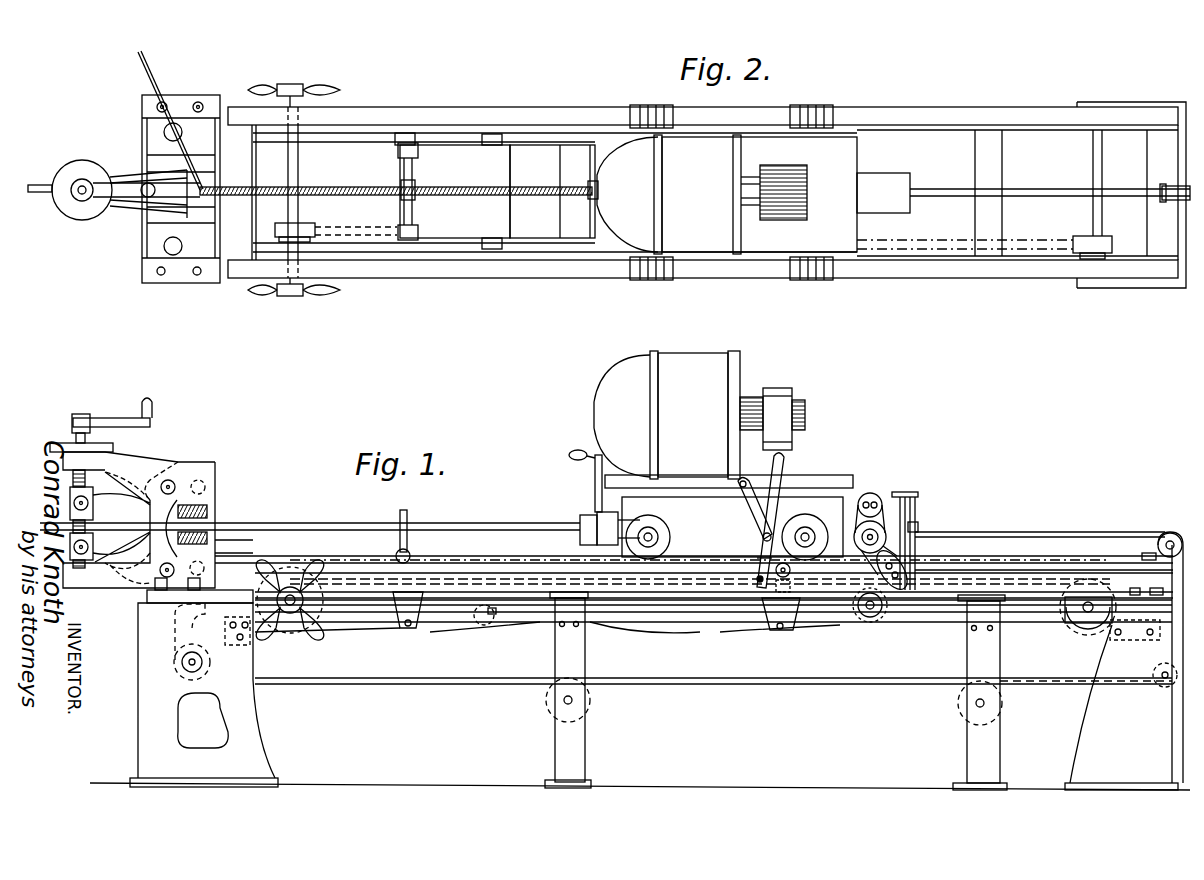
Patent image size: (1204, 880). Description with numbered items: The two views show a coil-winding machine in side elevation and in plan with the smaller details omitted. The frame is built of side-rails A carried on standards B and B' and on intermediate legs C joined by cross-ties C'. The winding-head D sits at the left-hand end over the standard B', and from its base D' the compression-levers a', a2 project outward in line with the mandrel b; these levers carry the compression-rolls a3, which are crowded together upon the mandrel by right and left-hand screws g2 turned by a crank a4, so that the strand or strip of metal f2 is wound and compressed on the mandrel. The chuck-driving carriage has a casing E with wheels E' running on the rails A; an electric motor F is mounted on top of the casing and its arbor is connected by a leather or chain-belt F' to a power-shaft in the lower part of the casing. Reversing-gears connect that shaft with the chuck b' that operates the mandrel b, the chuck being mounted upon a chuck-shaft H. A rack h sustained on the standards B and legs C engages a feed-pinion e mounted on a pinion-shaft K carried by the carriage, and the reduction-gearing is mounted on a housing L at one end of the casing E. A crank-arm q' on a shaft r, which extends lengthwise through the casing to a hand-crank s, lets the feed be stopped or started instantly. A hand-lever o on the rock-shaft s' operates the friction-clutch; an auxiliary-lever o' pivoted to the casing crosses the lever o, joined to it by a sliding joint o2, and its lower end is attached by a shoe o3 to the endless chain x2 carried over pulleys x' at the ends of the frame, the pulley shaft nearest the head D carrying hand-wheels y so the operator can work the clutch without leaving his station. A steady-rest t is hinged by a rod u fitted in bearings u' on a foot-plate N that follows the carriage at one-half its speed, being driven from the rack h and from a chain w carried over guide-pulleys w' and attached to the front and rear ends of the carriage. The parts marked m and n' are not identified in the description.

In FIG. 2, the side-rails A is at (1015, 118).
In FIG. 1, the side-rails A is at (270, 556).
In FIG. 2, the standard B is at (1131, 212).
In FIG. 1, the standard B is at (1113, 667).
In FIG. 1, the standard B' is at (195, 688).
In FIG. 1, the intermediate legs C is at (776, 691).
In FIG. 2, the cross-ties C' is at (742, 192).
In FIG. 2, the winding-head D is at (181, 189).
In FIG. 1, the winding-head D is at (139, 510).
In FIG. 2, the base of the winding-head D' is at (216, 180).
In FIG. 1, the base of the winding-head D' is at (234, 546).
In FIG. 2, the casing E is at (782, 200).
In FIG. 1, the casing E is at (729, 516).
In FIG. 2, the wheels E' is at (751, 177).
In FIG. 1, the wheels E' is at (727, 530).
In FIG. 2, the electric motor F is at (727, 194).
In FIG. 1, the electric motor F is at (667, 415).
In FIG. 1, the leather or chain-belt F' is at (787, 419).
In FIG. 2, the chuck-shaft H is at (940, 200).
In FIG. 1, the pinion-shaft K is at (884, 606).
In FIG. 2, the housing L is at (880, 180).
In FIG. 2, the foot-plate N is at (455, 191).
In FIG. 1, the foot-plate N is at (453, 622).
In FIG. 1, the compression-lever a' is at (135, 466).
In FIG. 1, the compression-lever a2 is at (128, 590).
In FIG. 1, the compression-rolls a3 is at (210, 510).
In FIG. 2, the crank a4 is at (146, 195).
In FIG. 1, the crank a4 is at (152, 410).
In FIG. 1, the mandrel b is at (305, 512).
In FIG. 1, the chuck b' is at (589, 514).
In FIG. 1, the feed-pinion e is at (840, 615).
In FIG. 2, the strand or strip of metal f2 is at (152, 76).
In FIG. 1, the right and left-hand screws g2 is at (72, 478).
In FIG. 2, the rack h is at (270, 187).
In FIG. 1, the rack h is at (352, 622).
In FIG. 1, the stop post m is at (906, 518).
In FIG. 2, the clamp plates n' is at (499, 165).
In FIG. 1, the hand-lever o is at (787, 519).
In FIG. 1, the auxiliary-lever o' is at (744, 509).
In FIG. 1, the sliding joint o2 is at (763, 538).
In FIG. 1, the shoe o3 is at (785, 595).
In FIG. 1, the crank-arm q' is at (931, 535).
In FIG. 1, the shaft r is at (880, 494).
In FIG. 1, the hand-crank s is at (581, 481).
In FIG. 1, the rock-shaft s' is at (730, 615).
In FIG. 2, the steady-rest t is at (416, 198).
In FIG. 1, the steady-rest t is at (408, 515).
In FIG. 2, the rod u is at (420, 191).
In FIG. 2, the bearings u' is at (388, 147).
In FIG. 1, the bearings u' is at (420, 547).
In FIG. 2, the chain w is at (1053, 219).
In FIG. 1, the chain w is at (716, 607).
In FIG. 2, the guide-pulleys w' is at (1138, 212).
In FIG. 1, the guide-pulleys w' is at (645, 606).
In FIG. 2, the pulleys x' is at (693, 194).
In FIG. 1, the pulleys x' is at (686, 561).
In FIG. 2, the chain x2 is at (366, 228).
In FIG. 1, the chain x2 is at (1065, 579).
In FIG. 2, the hand-wheels y is at (268, 84).
In FIG. 1, the hand-wheels y is at (300, 632).